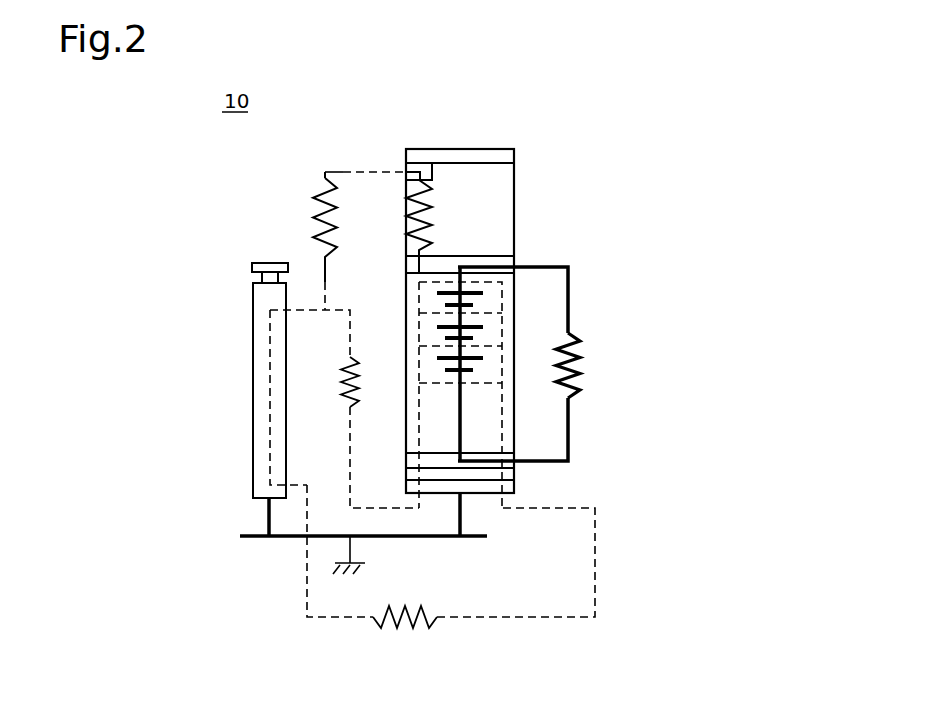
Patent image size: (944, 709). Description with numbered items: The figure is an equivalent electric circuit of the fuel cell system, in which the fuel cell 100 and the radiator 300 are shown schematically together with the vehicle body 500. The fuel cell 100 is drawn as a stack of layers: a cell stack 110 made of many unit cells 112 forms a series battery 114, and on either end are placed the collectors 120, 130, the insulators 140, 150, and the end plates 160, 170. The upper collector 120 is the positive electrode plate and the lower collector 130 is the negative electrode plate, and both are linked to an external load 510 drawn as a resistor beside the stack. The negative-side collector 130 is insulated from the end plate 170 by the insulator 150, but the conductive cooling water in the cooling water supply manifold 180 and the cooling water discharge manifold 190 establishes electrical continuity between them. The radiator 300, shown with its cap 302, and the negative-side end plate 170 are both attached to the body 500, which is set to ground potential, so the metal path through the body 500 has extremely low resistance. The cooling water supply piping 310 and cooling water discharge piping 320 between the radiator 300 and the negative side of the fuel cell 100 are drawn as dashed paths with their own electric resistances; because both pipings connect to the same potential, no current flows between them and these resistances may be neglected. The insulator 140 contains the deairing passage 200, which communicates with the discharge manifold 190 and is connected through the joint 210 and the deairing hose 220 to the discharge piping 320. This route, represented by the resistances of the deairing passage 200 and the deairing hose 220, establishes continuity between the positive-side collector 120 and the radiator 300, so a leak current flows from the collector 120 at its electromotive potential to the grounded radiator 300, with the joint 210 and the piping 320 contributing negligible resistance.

The fuel cell 100 is at (708, 150).
The cell stack 110 is at (514, 289).
The unit cell 112 is at (502, 430).
The series battery 114 is at (499, 362).
The collector 120 is at (514, 259).
The collector 130 is at (514, 466).
The insulator 140 is at (514, 173).
The insulator 150 is at (514, 477).
The end plate 160 is at (514, 153).
The end plate 170 is at (514, 489).
The cooling water supply manifold 180 is at (502, 305).
The cooling water discharge manifold 190 is at (410, 300).
The deairing passage 200 is at (432, 226).
The joint 210 is at (432, 168).
The deairing hose 220 is at (343, 172).
The radiator 300 is at (253, 351).
The switch knob 302 is at (252, 268).
The cooling water supply piping 310 is at (600, 563).
The cooling water discharge piping 320 is at (350, 462).
The vehicle body 500 is at (472, 540).
The external load 510 is at (572, 377).